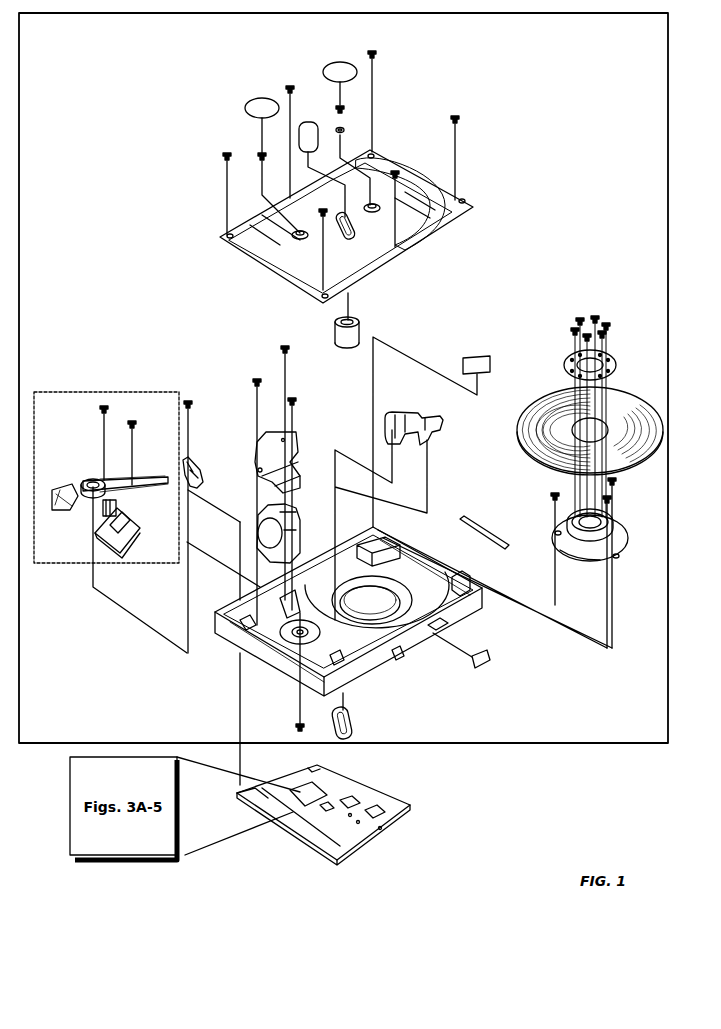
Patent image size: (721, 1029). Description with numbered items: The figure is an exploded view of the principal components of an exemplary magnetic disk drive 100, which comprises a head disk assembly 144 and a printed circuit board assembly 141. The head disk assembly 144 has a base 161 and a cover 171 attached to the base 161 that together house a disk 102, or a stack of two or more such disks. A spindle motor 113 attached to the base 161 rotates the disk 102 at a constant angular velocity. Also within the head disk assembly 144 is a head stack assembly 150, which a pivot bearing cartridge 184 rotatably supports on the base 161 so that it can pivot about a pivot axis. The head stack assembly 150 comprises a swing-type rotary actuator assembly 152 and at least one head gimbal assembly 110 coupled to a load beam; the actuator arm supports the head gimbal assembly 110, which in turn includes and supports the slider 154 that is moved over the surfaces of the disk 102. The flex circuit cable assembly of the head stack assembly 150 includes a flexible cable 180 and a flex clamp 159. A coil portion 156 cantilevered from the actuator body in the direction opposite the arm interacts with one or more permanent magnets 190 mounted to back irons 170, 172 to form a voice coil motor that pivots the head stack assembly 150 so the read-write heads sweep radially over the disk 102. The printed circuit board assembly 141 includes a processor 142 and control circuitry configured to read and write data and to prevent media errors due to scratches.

The magnetic disk drive 100 is at (548, 763).
The disk 102 is at (543, 397).
The head gimbal assembly 110 is at (147, 474).
The spindle motor 113 is at (543, 518).
The printed circuit board assembly 141 is at (362, 835).
The processor 142 is at (313, 795).
The head disk assembly 144 is at (470, 745).
The head stack assembly 150 is at (79, 393).
The rotary actuator assembly 152 is at (115, 477).
The slider 154 is at (165, 475).
The coil portion 156 is at (53, 510).
The flex clamp 159 is at (142, 540).
The base 161 is at (392, 667).
The back iron 170 is at (256, 455).
The cover 171 is at (445, 233).
The back iron 172 is at (300, 518).
The flexible cable 180 is at (128, 508).
The pivot bearing cartridge 184 is at (80, 481).
The permanent magnet 190 is at (268, 528).